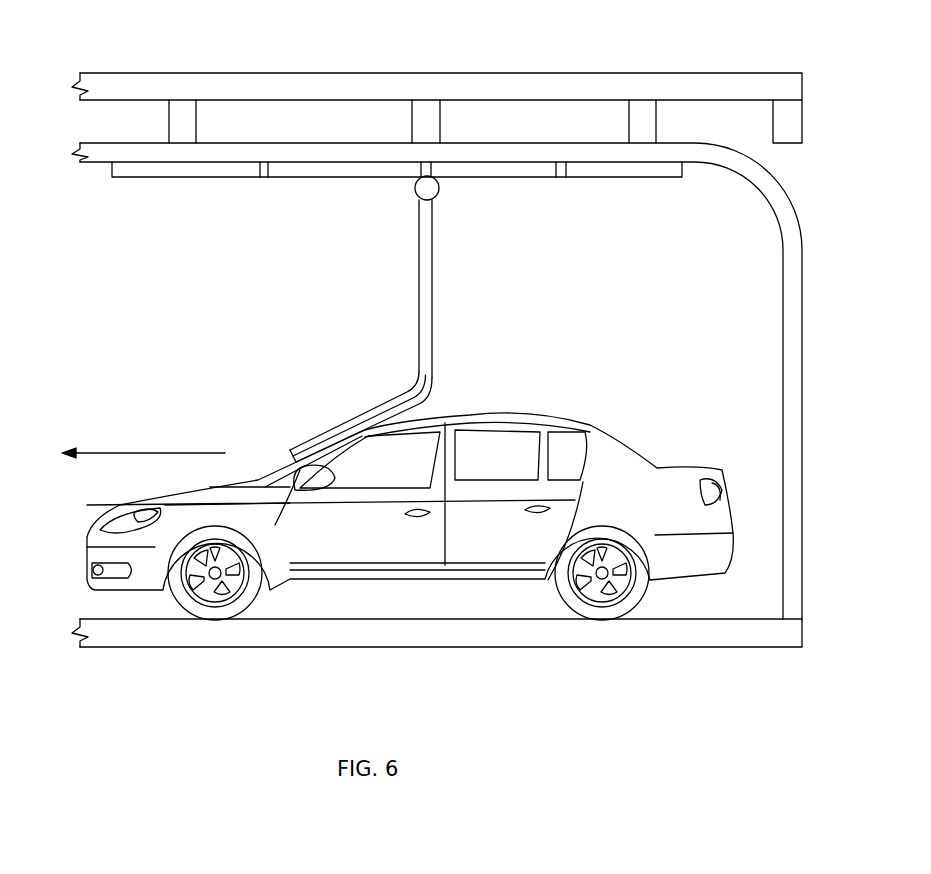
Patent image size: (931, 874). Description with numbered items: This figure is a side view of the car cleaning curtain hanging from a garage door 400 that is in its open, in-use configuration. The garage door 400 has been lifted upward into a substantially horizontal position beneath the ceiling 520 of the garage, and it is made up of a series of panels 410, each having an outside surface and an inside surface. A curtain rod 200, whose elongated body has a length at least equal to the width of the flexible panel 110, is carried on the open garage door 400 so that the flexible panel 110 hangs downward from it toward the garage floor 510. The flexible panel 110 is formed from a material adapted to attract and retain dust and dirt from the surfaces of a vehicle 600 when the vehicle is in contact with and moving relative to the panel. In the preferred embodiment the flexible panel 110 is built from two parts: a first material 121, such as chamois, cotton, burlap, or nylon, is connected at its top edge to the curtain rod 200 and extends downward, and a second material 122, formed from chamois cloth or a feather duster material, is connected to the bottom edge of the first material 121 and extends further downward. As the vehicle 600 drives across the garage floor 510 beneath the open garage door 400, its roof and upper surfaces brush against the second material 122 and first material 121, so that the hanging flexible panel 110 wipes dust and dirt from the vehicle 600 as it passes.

The ceiling 520 is at (386, 86).
The garage door 400 is at (158, 181).
The panel 410 is at (217, 182).
The curtain rod 200 is at (415, 188).
The flexible panel 110 is at (435, 228).
The first material 121 is at (416, 276).
The second material 122 is at (377, 398).
The vehicle 600 is at (576, 422).
The garage floor 510 is at (232, 648).